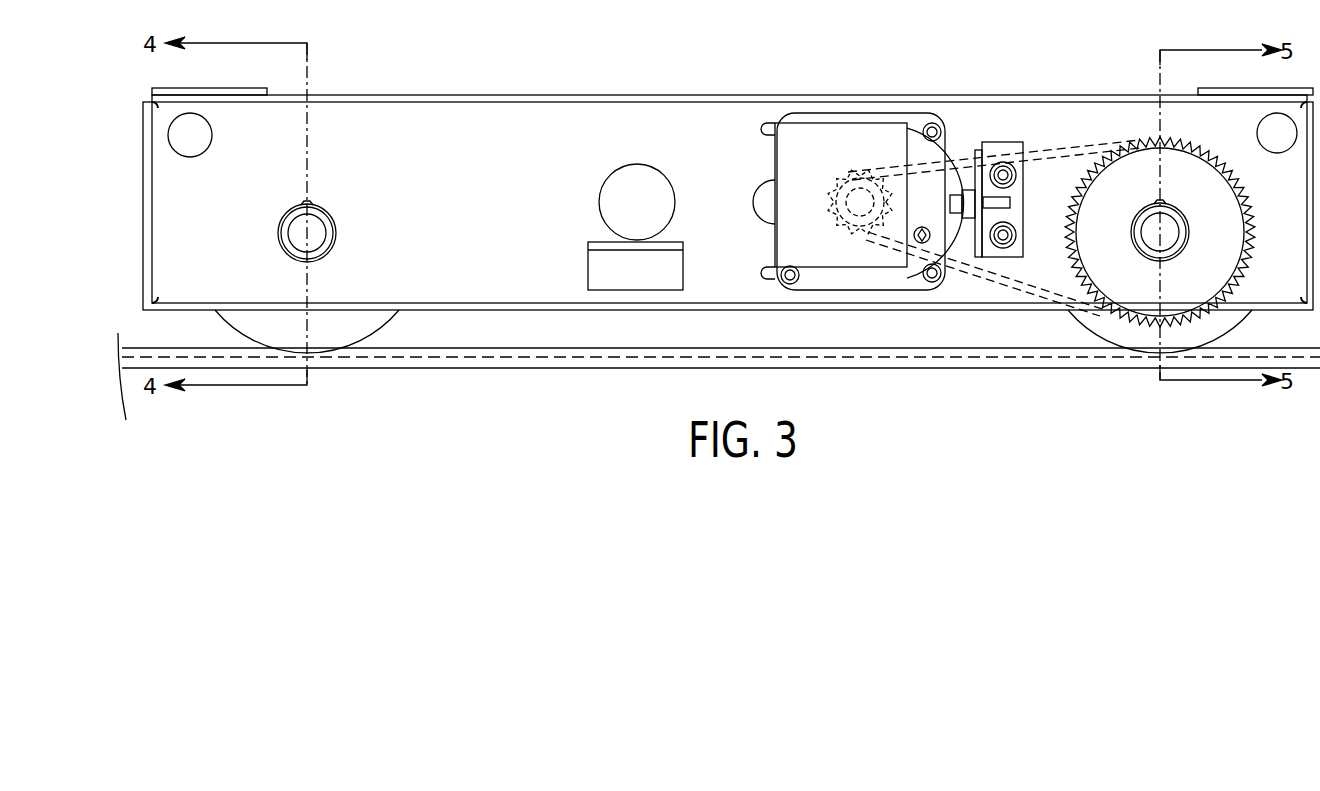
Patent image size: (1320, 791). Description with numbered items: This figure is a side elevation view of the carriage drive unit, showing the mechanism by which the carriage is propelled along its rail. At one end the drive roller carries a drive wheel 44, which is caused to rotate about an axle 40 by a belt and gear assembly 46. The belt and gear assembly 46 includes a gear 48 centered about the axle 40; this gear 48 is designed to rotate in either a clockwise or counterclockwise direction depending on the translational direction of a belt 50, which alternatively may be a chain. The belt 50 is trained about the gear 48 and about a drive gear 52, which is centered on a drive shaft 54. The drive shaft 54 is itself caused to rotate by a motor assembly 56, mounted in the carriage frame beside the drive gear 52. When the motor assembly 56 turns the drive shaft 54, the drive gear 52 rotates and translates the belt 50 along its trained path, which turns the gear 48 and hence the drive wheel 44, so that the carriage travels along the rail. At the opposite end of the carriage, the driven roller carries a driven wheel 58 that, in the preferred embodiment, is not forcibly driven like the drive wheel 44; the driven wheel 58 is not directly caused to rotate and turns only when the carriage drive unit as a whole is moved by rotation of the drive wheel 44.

The axle 40 is at (1152, 242).
The drive wheel 44 is at (1232, 323).
The belt and gear assembly 46 is at (1033, 127).
The gear 48 is at (1238, 226).
The belt 50 is at (1070, 152).
The drive gear 52 is at (848, 182).
The drive shaft 54 is at (857, 205).
The motor assembly 56 is at (1017, 258).
The driven wheel 58 is at (377, 326).